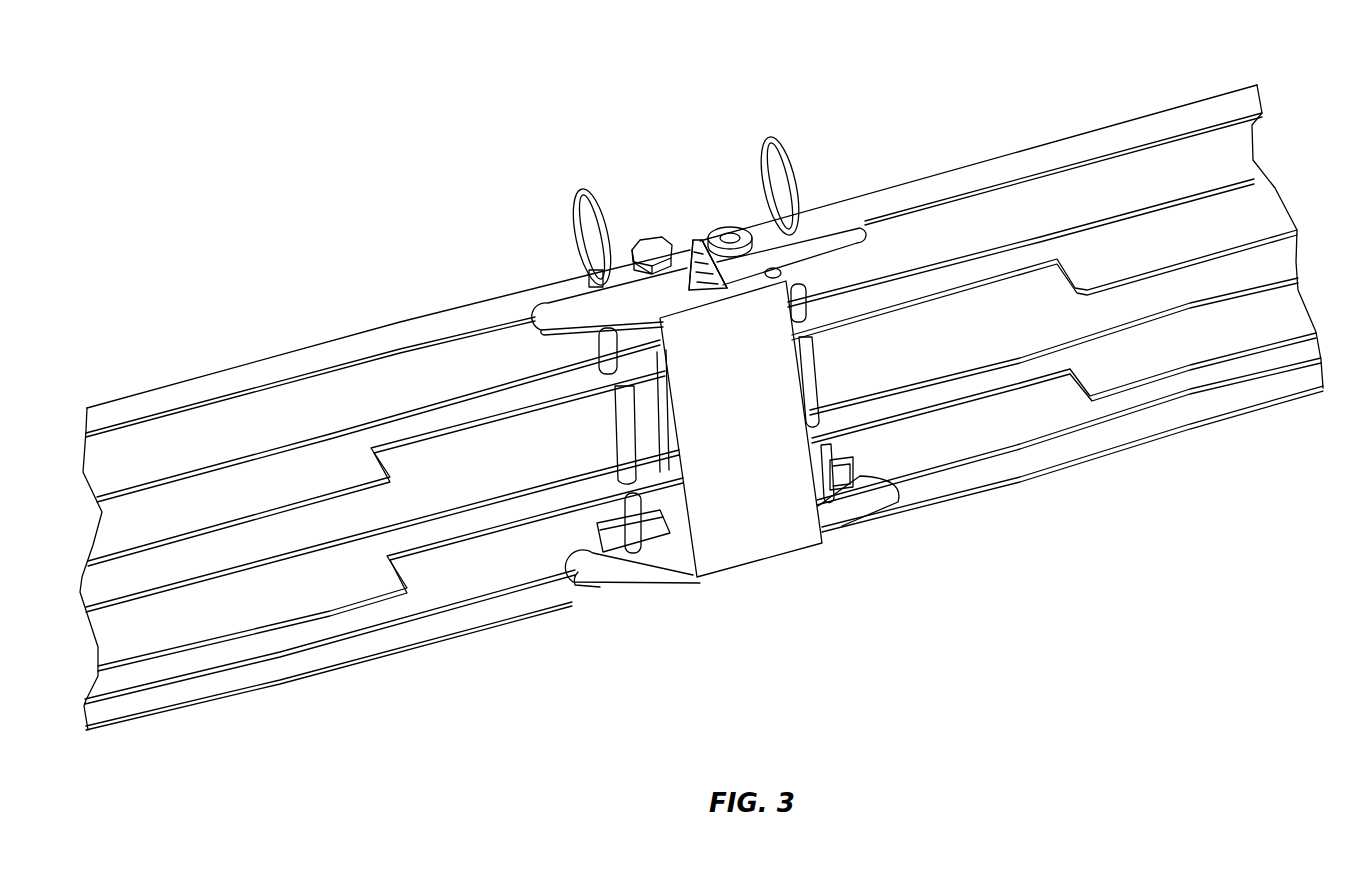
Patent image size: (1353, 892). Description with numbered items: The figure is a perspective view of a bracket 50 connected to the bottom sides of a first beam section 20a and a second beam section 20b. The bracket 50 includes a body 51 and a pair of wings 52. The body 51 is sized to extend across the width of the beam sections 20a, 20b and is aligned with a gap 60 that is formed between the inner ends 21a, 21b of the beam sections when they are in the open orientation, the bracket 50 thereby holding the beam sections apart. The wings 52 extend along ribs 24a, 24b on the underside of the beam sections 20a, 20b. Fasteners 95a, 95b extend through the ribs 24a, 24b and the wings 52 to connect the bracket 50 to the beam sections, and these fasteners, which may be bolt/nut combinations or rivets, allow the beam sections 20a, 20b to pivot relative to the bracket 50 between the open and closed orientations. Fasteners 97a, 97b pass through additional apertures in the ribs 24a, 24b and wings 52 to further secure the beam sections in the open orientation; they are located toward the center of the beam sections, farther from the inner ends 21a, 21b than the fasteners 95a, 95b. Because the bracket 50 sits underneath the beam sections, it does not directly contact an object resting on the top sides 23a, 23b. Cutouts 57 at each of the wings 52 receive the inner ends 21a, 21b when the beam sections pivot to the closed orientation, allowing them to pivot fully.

The first beam section 20a is at (403, 436).
The second beam section 20b is at (1011, 292).
The inner end of first beam section 21a is at (695, 245).
The inner end of second beam section 21b is at (703, 238).
The top side of first beam section 23a is at (345, 332).
The top side of second beam section 23b is at (1103, 117).
The rib of first beam section 24a is at (242, 380).
The rib of second beam section 24b is at (1173, 122).
The bracket 50 is at (708, 397).
The body 51 is at (820, 522).
The wings 52 is at (583, 320).
The cutouts 57 is at (732, 298).
The gap 60 is at (692, 207).
The first fastener 95a is at (650, 242).
The second fastener 95b is at (730, 236).
The first additional fastener 97a is at (595, 268).
The second additional fastener 97b is at (777, 228).